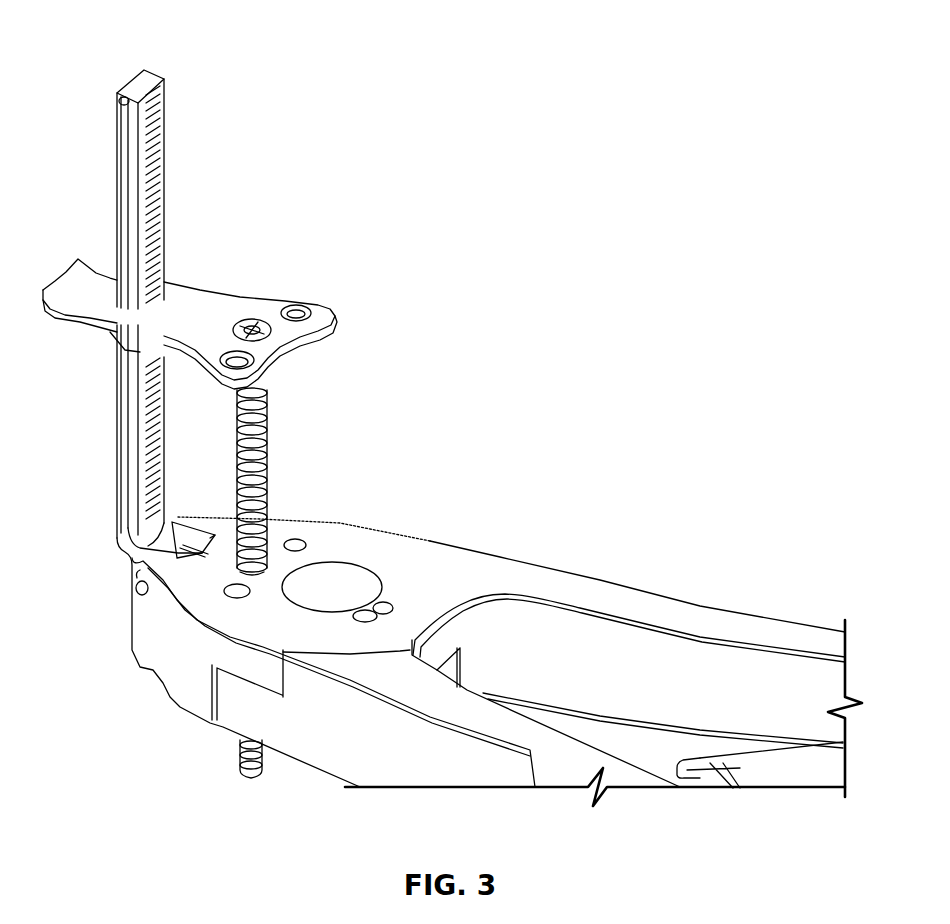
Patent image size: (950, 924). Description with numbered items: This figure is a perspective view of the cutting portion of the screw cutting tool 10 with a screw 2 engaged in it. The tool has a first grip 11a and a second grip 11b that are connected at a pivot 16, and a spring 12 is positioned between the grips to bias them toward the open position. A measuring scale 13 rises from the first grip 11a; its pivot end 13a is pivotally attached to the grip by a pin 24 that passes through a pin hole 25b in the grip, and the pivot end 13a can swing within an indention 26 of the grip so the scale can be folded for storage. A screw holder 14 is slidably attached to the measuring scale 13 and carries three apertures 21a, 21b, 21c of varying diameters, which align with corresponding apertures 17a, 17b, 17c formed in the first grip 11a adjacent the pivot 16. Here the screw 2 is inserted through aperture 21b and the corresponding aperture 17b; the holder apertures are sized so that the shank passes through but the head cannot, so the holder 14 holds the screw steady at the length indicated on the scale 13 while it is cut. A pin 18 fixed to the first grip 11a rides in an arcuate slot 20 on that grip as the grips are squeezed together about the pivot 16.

The screw cutting tool 10 is at (606, 183).
The measuring scale 13 is at (150, 105).
The pivot end 13a is at (180, 542).
The screw holder 14 is at (228, 283).
The aperture 21a is at (233, 357).
The aperture 21b is at (256, 330).
The aperture 21c is at (298, 314).
The screw 2 is at (266, 447).
The aperture 17a is at (237, 592).
The aperture 17b is at (268, 550).
The aperture 17c is at (298, 547).
The pivot 16 is at (352, 570).
The pin 18 is at (385, 606).
The first grip 11a is at (578, 626).
The second grip 11b is at (407, 763).
The spring 12 is at (705, 762).
The pin 24 is at (137, 590).
The pin hole 25b is at (140, 584).
The indention 26 is at (202, 533).
The arcuate slot 20 is at (363, 620).